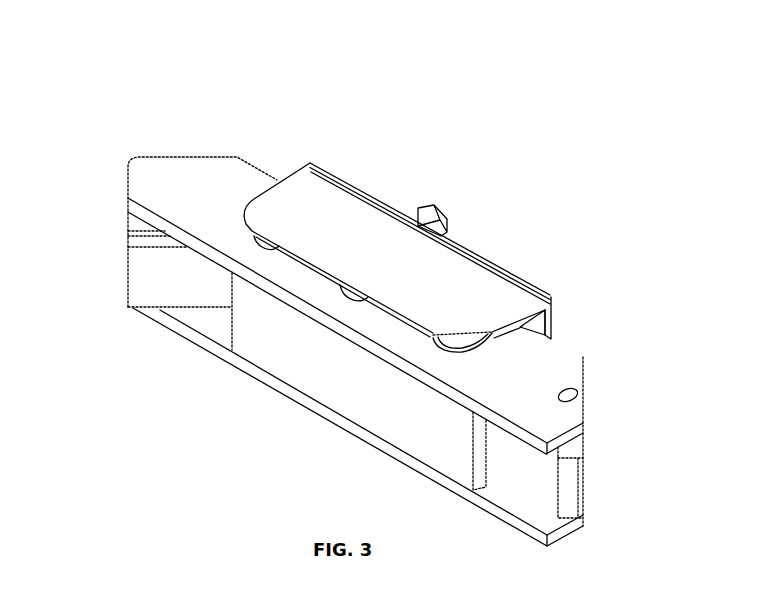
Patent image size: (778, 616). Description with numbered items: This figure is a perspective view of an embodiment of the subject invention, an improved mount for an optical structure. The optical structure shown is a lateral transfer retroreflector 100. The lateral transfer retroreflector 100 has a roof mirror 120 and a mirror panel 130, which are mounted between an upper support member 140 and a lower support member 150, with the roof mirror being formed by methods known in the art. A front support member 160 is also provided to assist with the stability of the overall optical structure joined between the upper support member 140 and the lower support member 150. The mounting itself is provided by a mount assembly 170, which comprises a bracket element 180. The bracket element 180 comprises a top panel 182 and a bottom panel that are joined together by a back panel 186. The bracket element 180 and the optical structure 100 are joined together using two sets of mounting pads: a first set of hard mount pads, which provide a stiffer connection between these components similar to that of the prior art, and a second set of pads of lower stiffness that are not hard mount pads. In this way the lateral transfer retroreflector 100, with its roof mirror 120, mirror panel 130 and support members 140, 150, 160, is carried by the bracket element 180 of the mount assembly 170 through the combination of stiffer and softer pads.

The lateral transfer retroreflector 100 is at (542, 368).
The roof mirror 120 is at (150, 277).
The mirror panel 130 is at (570, 483).
The upper support member 140 is at (173, 177).
The lower support member 150 is at (514, 482).
The front support member 160 is at (270, 343).
The mount assembly 170 is at (460, 277).
The bracket element 180 is at (310, 163).
The top panel 182 is at (347, 235).
The back panel 186 is at (553, 325).